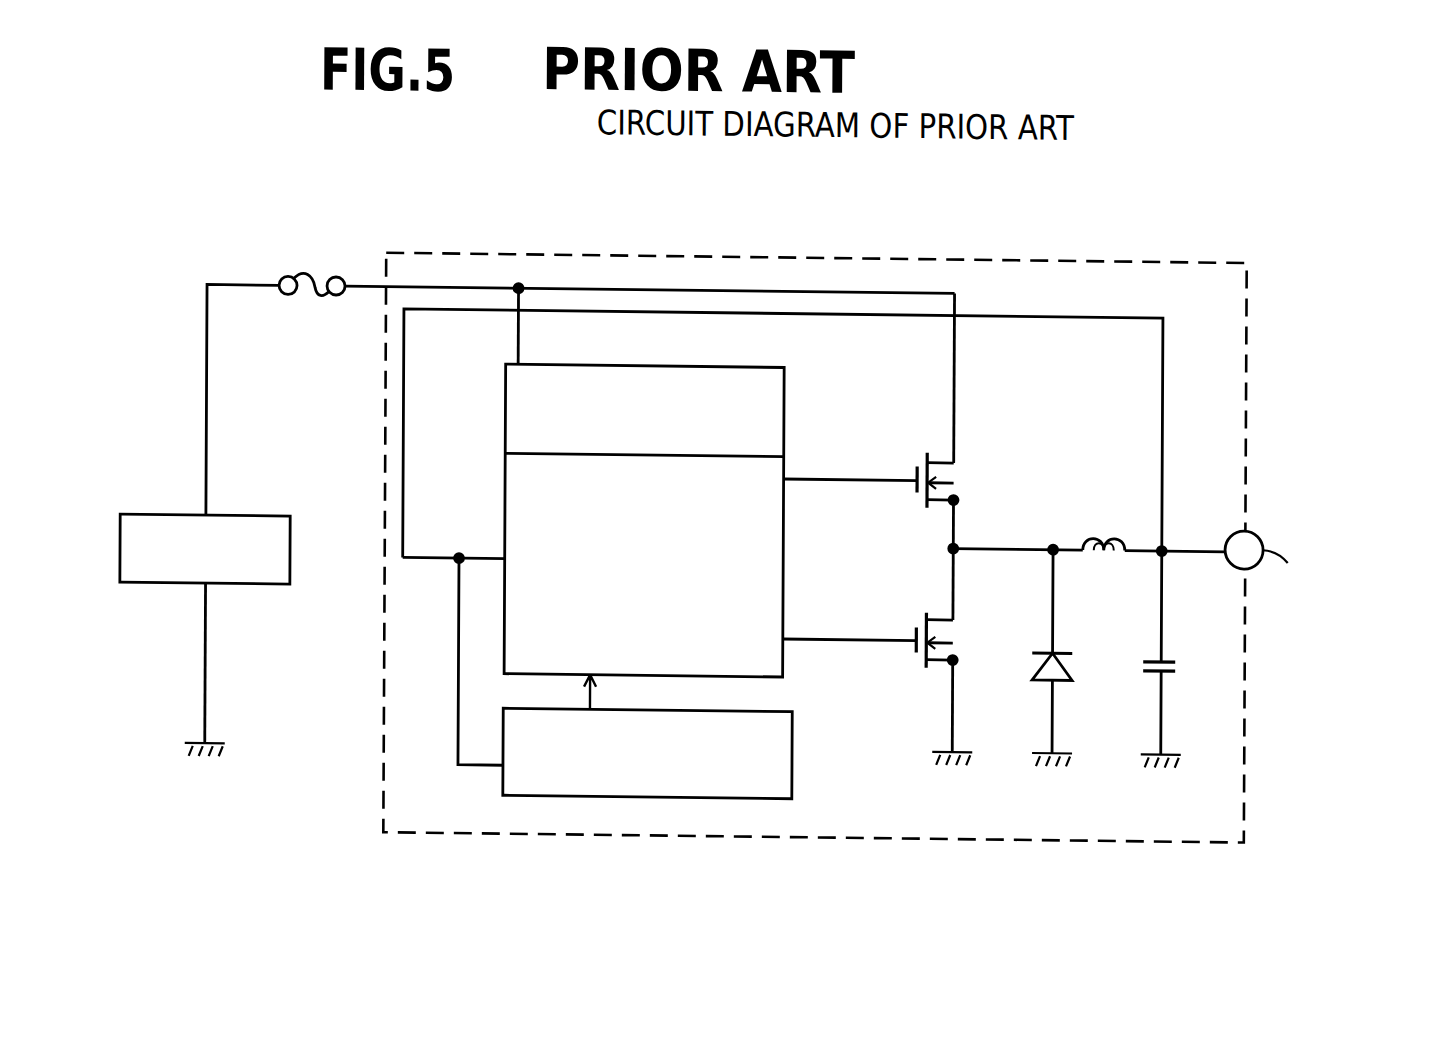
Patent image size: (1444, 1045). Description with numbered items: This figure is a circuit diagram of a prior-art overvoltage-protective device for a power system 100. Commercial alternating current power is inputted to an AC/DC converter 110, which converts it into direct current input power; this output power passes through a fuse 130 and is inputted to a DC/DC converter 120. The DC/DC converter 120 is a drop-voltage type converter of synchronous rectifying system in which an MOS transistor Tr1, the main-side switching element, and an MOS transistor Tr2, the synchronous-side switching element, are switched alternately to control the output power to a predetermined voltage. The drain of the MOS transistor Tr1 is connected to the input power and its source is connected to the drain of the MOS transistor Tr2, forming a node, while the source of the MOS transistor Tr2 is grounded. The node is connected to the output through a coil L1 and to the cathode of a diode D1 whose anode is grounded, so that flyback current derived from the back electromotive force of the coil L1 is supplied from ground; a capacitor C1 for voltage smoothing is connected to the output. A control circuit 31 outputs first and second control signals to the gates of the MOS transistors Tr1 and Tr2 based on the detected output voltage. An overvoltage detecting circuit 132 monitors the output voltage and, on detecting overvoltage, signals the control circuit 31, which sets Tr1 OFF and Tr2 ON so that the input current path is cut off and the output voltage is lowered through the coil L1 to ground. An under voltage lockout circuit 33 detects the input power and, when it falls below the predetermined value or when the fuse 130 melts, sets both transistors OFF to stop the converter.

The power system 100 is at (297, 220).
The AC/DC converter 110 is at (225, 524).
The DC/DC converter 120 is at (812, 256).
The fuse 130 is at (305, 297).
The overvoltage detecting circuit 132 is at (793, 787).
The control circuit 31 is at (518, 514).
The under voltage lockout circuit 33 is at (782, 431).
The MOS transistor Tr1 is at (992, 462).
The MOS transistor Tr2 is at (962, 645).
The coil L1 is at (1110, 528).
The diode D1 is at (1071, 662).
The capacitor C1 is at (1181, 662).